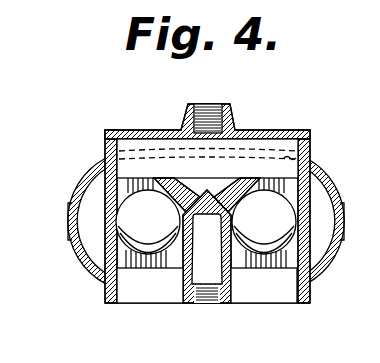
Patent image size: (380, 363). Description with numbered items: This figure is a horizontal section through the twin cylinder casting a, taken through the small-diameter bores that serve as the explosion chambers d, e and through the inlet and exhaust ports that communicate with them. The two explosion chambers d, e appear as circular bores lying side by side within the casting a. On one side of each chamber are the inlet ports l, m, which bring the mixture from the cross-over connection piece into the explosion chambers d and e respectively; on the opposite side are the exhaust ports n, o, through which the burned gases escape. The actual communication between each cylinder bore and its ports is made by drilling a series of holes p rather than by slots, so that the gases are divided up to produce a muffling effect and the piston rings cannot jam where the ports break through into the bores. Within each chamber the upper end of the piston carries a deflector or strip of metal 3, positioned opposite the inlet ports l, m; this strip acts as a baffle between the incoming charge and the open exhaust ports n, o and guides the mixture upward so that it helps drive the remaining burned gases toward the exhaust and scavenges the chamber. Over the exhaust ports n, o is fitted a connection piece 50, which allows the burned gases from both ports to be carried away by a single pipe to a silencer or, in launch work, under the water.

The connection piece 50 is at (252, 132).
The exhaust port n is at (130, 164).
The exhaust port o is at (300, 154).
The holes p is at (163, 188).
The explosion chamber d is at (118, 212).
The explosion chamber e is at (294, 211).
The deflector 3 is at (143, 254).
The twin cylinder casting a is at (105, 240).
The inlet port l is at (128, 301).
The inlet port m is at (272, 298).